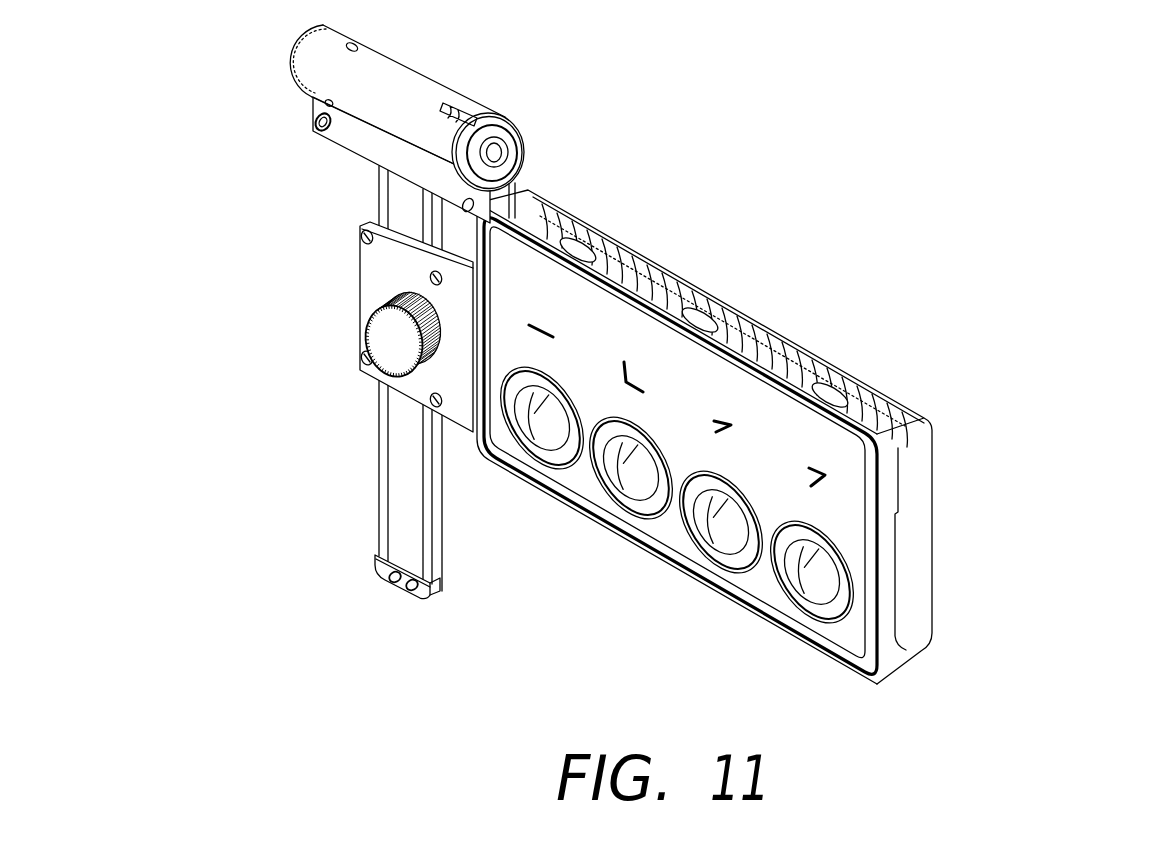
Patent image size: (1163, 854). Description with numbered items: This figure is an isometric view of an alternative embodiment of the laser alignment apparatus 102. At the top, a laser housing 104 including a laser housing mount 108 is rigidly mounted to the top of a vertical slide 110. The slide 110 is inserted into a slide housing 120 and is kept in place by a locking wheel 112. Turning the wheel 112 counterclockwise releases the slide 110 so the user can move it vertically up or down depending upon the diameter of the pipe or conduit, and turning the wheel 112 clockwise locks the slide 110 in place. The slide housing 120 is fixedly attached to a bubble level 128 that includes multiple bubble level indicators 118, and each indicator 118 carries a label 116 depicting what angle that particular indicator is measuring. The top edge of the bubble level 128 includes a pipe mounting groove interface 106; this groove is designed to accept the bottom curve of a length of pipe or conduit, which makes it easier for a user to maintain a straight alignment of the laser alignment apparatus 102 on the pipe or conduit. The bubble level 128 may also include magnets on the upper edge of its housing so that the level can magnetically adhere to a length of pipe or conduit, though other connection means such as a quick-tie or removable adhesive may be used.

The laser alignment apparatus 102 is at (1040, 201).
The laser housing 104 is at (440, 77).
The pipe mounting groove interface 106 is at (744, 310).
The laser housing mount 108 is at (325, 135).
The vertical slide 110 is at (377, 191).
The locking wheel 112 is at (368, 312).
The label 116 is at (807, 497).
The bubble level indicators 118 is at (781, 584).
The slide housing 120 is at (361, 267).
The bubble level 128 is at (933, 472).